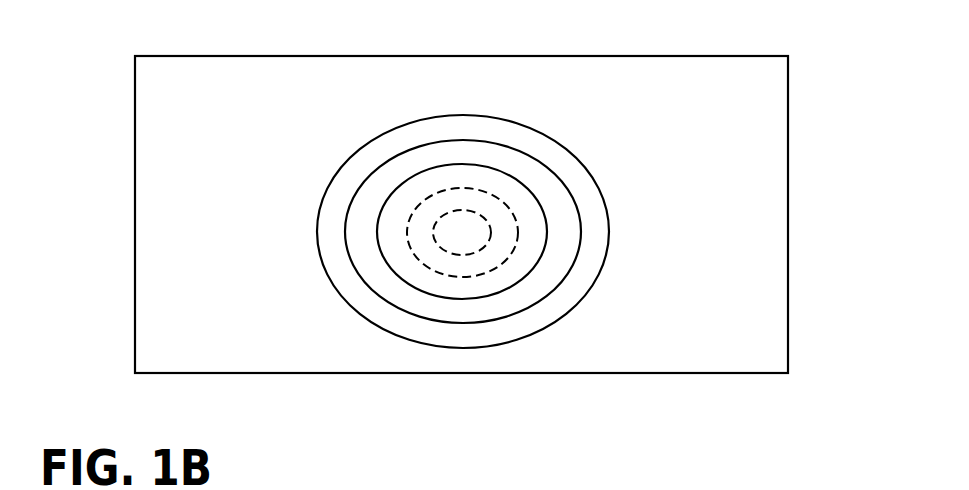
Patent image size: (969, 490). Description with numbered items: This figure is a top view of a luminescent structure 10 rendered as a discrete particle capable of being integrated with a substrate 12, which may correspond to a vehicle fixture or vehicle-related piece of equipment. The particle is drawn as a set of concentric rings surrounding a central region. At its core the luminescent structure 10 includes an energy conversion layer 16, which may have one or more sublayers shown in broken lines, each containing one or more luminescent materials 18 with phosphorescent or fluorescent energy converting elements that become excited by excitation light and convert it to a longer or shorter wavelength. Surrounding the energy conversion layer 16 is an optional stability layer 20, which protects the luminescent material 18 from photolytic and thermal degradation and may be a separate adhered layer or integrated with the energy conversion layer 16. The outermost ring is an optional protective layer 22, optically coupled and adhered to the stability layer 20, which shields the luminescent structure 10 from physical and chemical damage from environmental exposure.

The luminescent structure 10 is at (363, 127).
The substrate 12 is at (789, 165).
The protective layer 22 is at (502, 118).
The stability layer 20 is at (530, 158).
The energy conversion layer 16 is at (522, 282).
The luminescent material 18 is at (447, 250).